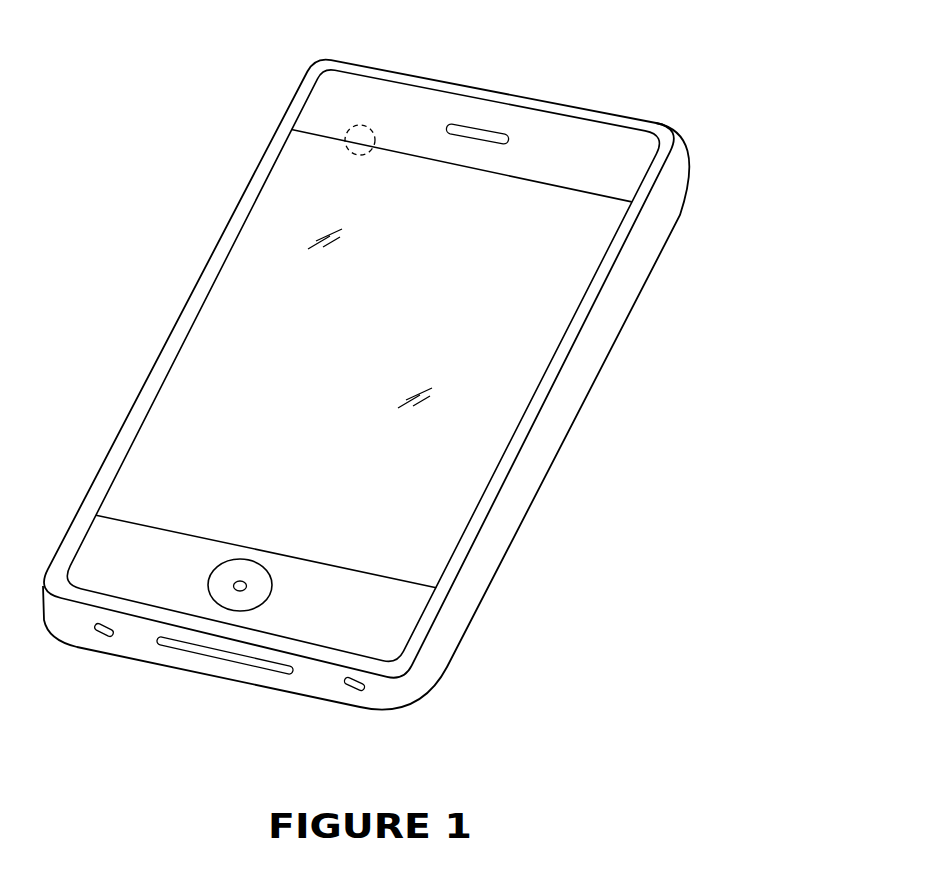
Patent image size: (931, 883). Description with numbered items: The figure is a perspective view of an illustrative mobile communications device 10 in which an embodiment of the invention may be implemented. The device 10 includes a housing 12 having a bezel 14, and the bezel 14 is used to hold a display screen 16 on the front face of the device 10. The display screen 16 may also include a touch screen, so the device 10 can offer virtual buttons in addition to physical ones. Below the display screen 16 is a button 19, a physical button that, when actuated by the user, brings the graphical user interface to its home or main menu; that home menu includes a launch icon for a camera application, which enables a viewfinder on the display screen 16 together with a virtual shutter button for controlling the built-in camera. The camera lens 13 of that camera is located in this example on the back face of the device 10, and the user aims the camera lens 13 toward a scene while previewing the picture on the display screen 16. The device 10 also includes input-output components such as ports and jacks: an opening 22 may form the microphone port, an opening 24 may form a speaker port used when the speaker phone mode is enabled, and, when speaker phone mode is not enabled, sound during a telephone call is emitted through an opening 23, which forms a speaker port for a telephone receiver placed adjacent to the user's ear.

The mobile communications device 10 is at (723, 68).
The housing 12 is at (543, 464).
The camera lens 13 is at (348, 138).
The bezel 14 is at (170, 336).
The display screen 16 is at (588, 257).
The button 19 is at (268, 596).
The opening 22 is at (105, 637).
The opening 23 is at (493, 127).
The opening 24 is at (355, 689).